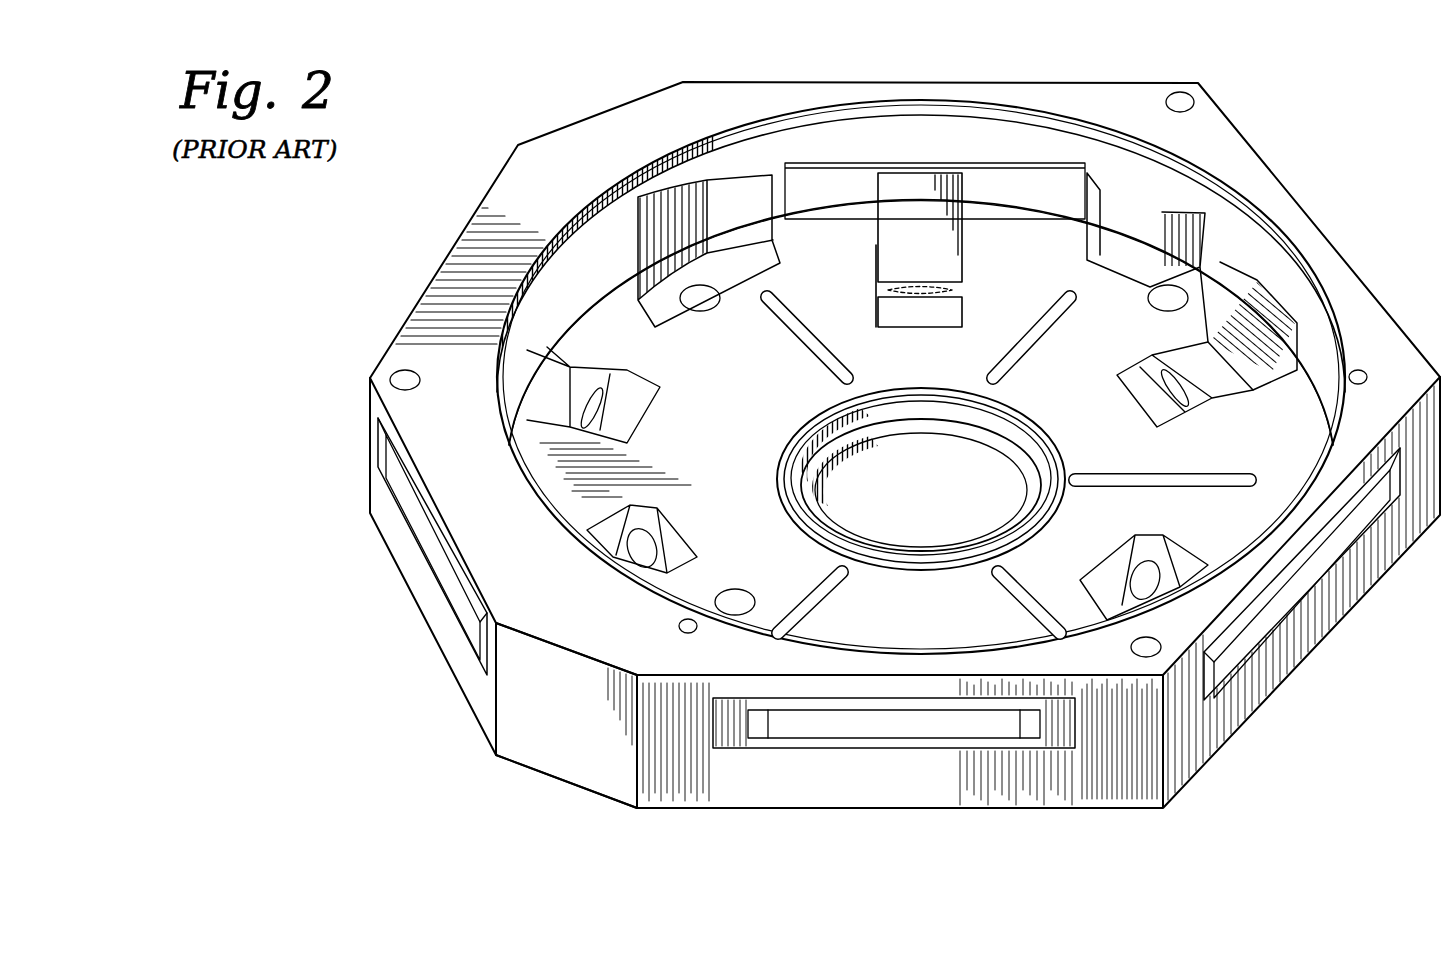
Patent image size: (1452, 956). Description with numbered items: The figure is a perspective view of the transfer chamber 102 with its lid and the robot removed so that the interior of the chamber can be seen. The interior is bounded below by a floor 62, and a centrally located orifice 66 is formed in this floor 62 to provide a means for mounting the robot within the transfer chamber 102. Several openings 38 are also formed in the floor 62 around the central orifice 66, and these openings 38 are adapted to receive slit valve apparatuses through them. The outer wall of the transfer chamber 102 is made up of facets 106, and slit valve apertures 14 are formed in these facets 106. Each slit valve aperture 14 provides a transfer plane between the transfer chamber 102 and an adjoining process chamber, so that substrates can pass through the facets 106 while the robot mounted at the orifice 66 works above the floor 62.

The slit valve aperture 14 is at (917, 152).
The opening 38 is at (604, 413).
The floor 62 is at (937, 626).
The orifice 66 is at (937, 519).
The transfer chamber 102 is at (1312, 141).
The facet 106 is at (488, 725).